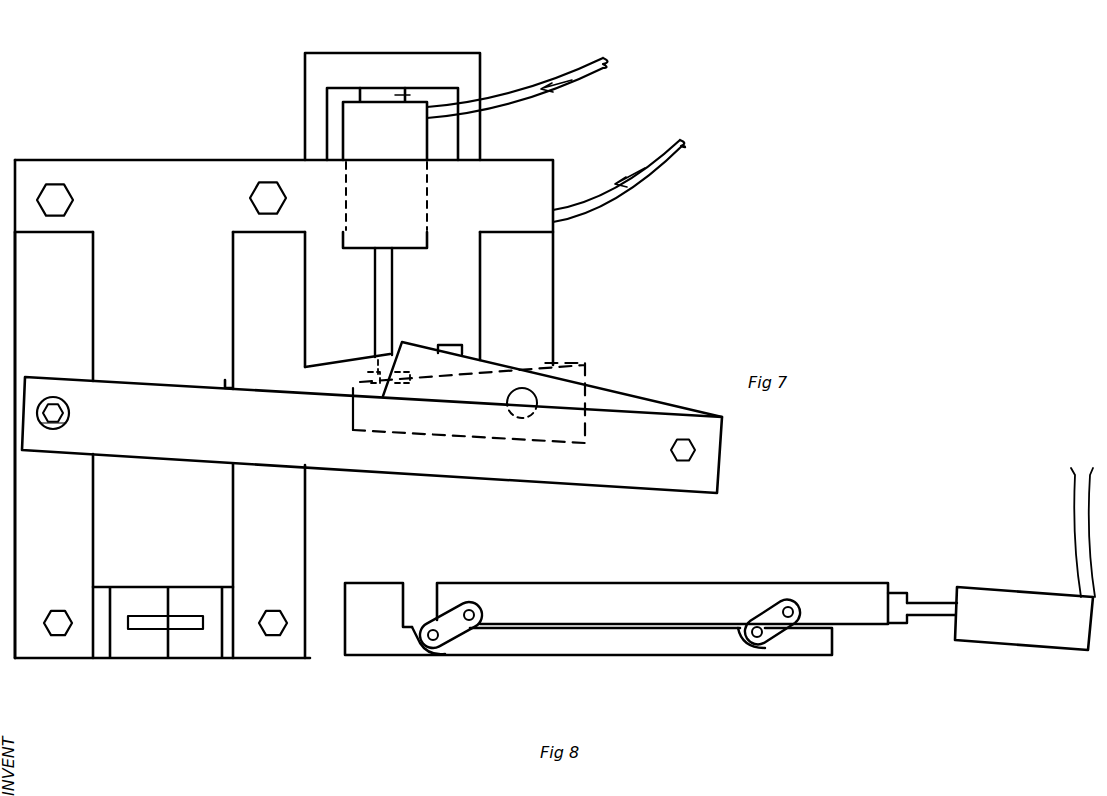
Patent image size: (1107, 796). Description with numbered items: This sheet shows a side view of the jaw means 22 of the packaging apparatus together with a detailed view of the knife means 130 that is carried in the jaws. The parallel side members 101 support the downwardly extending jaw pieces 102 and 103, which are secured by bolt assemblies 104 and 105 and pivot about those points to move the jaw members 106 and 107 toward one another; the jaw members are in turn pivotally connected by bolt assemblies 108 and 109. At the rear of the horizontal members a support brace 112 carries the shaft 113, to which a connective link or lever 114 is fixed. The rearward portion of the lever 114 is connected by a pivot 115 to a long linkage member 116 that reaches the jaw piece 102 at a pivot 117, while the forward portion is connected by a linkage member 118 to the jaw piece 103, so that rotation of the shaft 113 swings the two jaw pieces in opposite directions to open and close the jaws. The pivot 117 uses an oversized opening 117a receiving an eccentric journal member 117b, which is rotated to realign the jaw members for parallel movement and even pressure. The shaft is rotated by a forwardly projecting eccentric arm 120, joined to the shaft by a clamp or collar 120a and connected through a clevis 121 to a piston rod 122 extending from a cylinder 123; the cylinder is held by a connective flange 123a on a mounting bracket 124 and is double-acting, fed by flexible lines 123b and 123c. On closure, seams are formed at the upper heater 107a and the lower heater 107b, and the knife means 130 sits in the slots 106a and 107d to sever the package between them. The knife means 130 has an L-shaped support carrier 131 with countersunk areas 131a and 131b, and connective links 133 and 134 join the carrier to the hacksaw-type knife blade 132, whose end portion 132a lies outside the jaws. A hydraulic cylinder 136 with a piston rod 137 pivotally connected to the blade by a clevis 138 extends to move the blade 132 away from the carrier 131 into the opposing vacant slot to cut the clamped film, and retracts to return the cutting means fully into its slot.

In FIG. 7, the jaw means 22 is at (745, 310).
In FIG. 7, the side members 101 is at (170, 214).
In FIG. 7, the jaw piece 102 is at (80, 523).
In FIG. 7, the jaw piece 103 is at (292, 537).
In FIG. 7, the bolt assembly 104 is at (52, 198).
In FIG. 7, the bolt assembly 105 is at (265, 195).
In FIG. 7, the jaw member 106 is at (130, 660).
In FIG. 7, the slot 106a is at (127, 622).
In FIG. 7, the jaw member 107 is at (205, 650).
In FIG. 7, the upper heater 107a is at (180, 607).
In FIG. 7, the lower heater 107b is at (170, 640).
In FIG. 7, the slot 107d is at (205, 622).
In FIG. 7, the bolt assembly 108 is at (58, 637).
In FIG. 7, the bolt assembly 109 is at (277, 634).
In FIG. 7, the support brace 112 is at (542, 272).
In FIG. 7, the shaft 113 is at (517, 401).
In FIG. 7, the connective link 114 is at (620, 406).
In FIG. 7, the pivot 115 is at (690, 452).
In FIG. 7, the linkage member 116 is at (617, 488).
In FIG. 7, the pivot 117 is at (56, 413).
In FIG. 7, the oversized opening 117a is at (60, 424).
In FIG. 7, the eccentric journal member 117b is at (62, 405).
In FIG. 7, the linkage member 118 is at (340, 388).
In FIG. 7, the eccentric arm 120 is at (443, 382).
In FIG. 7, the clamp or collar 120a is at (583, 373).
In FIG. 7, the clevis 121 is at (366, 370).
In FIG. 7, the piston rod 122 is at (395, 292).
In FIG. 7, the cylinder 123 is at (408, 138).
In FIG. 7, the connective flange 123a is at (412, 95).
In FIG. 7, the air line 123b is at (588, 76).
In FIG. 7, the air line 123c is at (650, 170).
In FIG. 7, the mounting bracket 124 is at (305, 75).
In FIG. 7, the knife means 130 is at (146, 619).
In FIG. 8, the knife means 130 is at (672, 578).
In FIG. 8, the support carrier 131 is at (375, 597).
In FIG. 8, the countersunk area 131a is at (445, 651).
In FIG. 8, the countersunk area 131b is at (738, 641).
In FIG. 8, the knife blade 132 is at (636, 615).
In FIG. 8, the end portion of the knife 132a is at (828, 595).
In FIG. 8, the connective link 133 is at (455, 617).
In FIG. 8, the connective link 134 is at (765, 620).
In FIG. 8, the hydraulic cylinder 136 is at (1005, 617).
In FIG. 8, the piston rod 137 is at (930, 617).
In FIG. 8, the clevis 138 is at (900, 595).